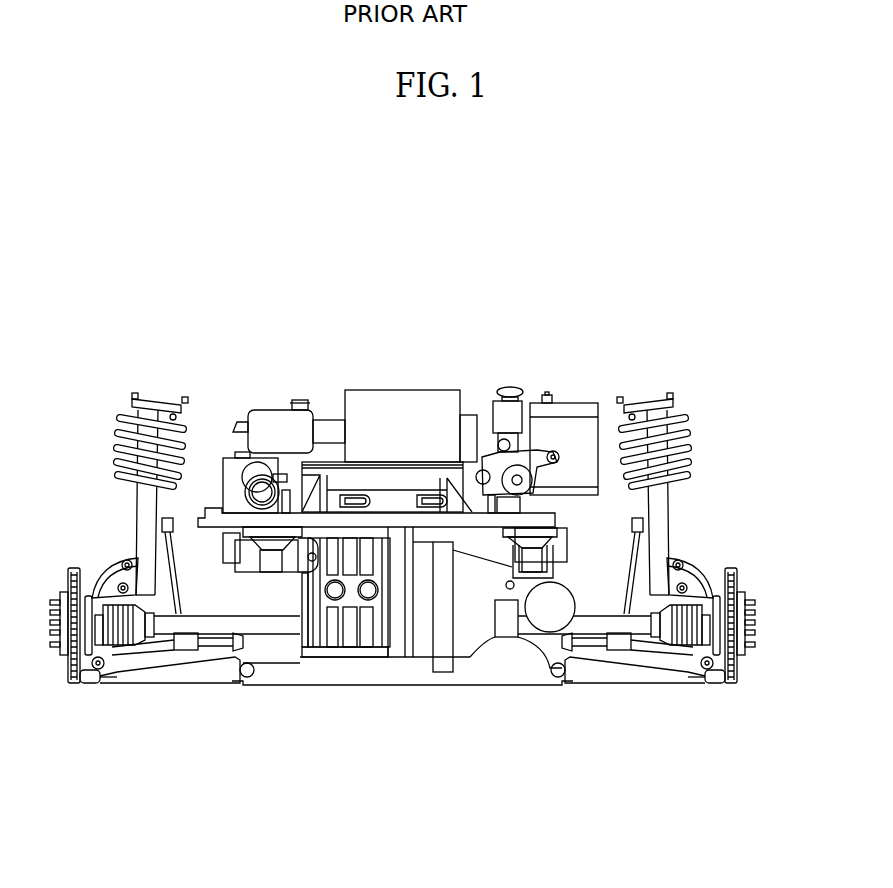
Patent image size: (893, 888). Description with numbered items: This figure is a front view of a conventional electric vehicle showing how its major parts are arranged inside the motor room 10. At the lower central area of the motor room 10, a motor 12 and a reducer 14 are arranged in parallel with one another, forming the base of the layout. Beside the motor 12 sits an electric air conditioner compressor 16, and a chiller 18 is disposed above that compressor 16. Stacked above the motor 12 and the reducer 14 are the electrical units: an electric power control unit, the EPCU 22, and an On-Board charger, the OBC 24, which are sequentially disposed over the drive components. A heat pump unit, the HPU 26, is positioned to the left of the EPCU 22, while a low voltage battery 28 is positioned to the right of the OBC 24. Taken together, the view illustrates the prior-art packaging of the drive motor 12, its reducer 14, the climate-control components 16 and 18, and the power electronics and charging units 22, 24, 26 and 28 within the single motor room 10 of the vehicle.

The motor room 10 is at (222, 412).
The motor 12 is at (347, 623).
The reducer 14 is at (440, 627).
The electric air conditioner compressor 16 is at (545, 617).
The chiller 18 is at (555, 551).
The electric power control unit (EPCU) 22 is at (420, 480).
The On-Board charger (OBC) 24 is at (382, 428).
The heat pump unit (HPU) 26 is at (235, 478).
The low voltage battery 28 is at (566, 428).